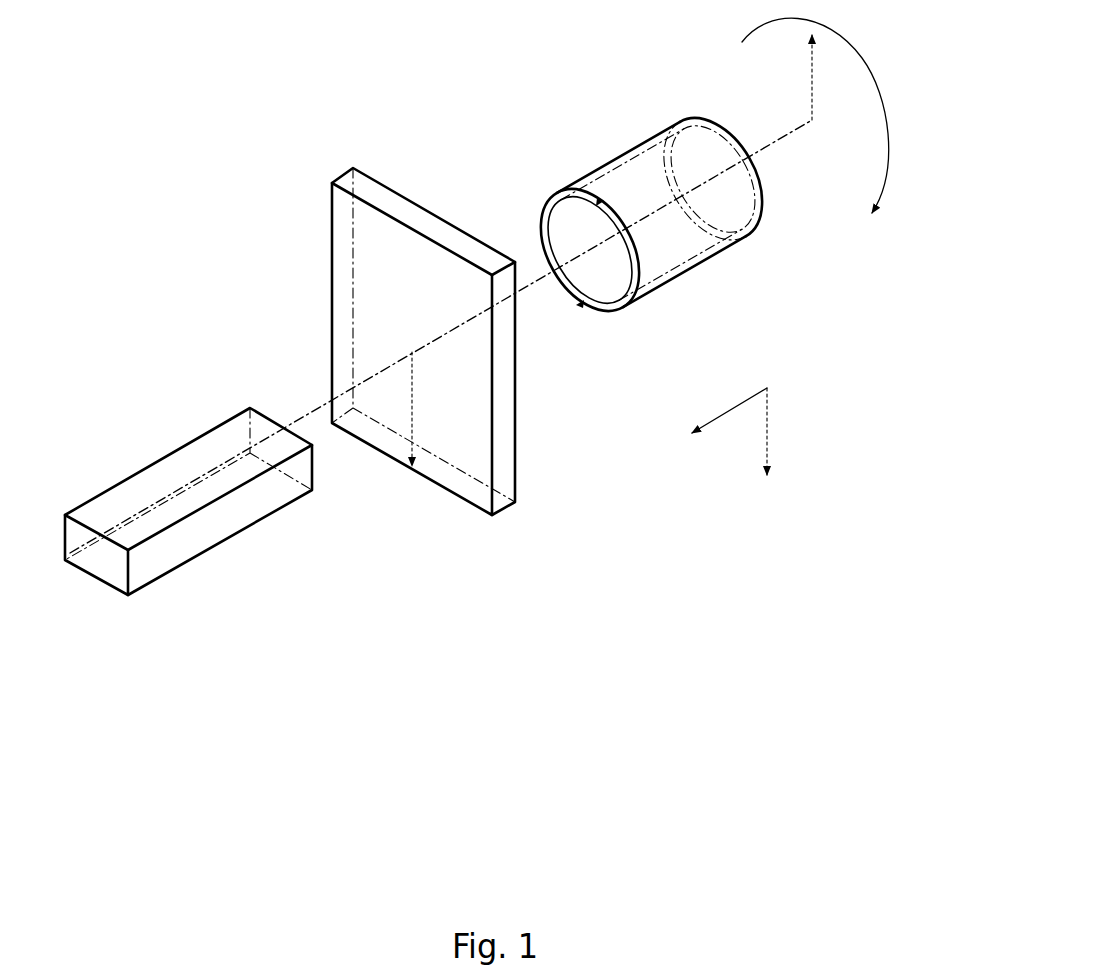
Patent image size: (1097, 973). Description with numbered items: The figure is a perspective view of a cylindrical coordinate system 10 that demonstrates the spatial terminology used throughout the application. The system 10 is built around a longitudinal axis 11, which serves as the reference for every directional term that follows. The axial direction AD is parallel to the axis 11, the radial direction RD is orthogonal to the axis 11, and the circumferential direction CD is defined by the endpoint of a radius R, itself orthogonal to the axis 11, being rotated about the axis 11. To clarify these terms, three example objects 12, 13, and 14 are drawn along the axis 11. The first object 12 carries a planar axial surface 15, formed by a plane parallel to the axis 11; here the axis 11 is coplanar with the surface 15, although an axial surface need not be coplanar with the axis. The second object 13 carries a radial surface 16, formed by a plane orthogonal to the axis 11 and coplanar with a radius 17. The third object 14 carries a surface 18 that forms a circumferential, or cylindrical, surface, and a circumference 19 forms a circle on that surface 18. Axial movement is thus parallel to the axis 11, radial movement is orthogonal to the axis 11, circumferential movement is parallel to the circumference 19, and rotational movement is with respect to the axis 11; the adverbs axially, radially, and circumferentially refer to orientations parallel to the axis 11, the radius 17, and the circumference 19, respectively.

The cylindrical coordinate system 10 is at (287, 217).
The longitudinal axis 11 is at (747, 148).
The object 12 is at (155, 582).
The object 13 is at (523, 505).
The object 14 is at (675, 282).
The axial surface 15 is at (148, 483).
The radial surface 16 is at (345, 300).
The radius 17 is at (412, 403).
The circumferential surface 18 is at (618, 150).
The circumference 19 is at (540, 212).
The radius R is at (812, 72).
The circumferential direction CD is at (848, 60).
The axial direction AD is at (732, 410).
The radial direction RD is at (767, 428).